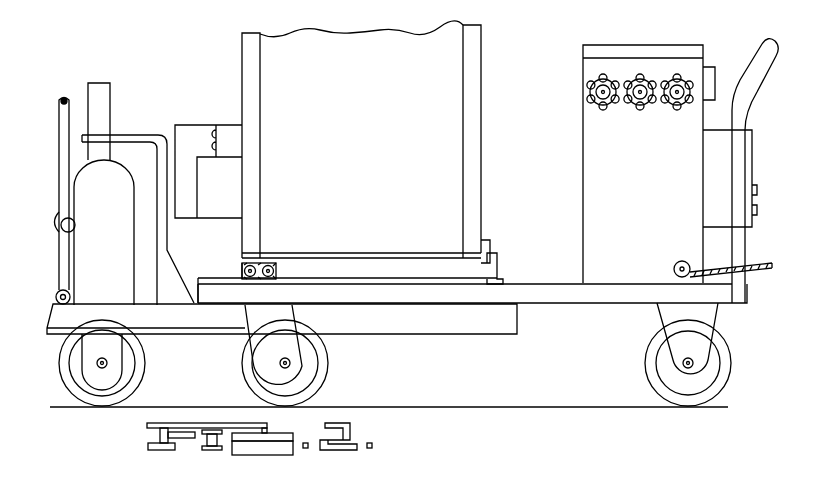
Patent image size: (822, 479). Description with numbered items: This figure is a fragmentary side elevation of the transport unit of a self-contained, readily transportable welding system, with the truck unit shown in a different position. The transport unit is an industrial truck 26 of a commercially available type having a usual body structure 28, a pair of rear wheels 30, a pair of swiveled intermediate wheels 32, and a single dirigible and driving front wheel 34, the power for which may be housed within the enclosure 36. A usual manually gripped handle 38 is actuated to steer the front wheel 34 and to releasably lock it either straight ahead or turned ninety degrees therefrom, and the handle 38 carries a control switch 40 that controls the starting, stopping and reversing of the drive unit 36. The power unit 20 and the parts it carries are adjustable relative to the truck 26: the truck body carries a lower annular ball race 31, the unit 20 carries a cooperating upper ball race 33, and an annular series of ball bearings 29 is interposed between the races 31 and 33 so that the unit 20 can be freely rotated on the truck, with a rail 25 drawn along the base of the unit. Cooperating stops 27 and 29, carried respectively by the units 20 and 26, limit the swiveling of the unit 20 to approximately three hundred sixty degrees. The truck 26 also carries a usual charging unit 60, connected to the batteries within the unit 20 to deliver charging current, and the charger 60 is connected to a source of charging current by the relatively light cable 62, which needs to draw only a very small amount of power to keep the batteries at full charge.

The power unit 20 is at (447, 93).
The rail 25 is at (350, 254).
The industrial truck 26 is at (490, 338).
The stop 27 is at (490, 243).
The body structure 28 is at (230, 318).
The ball bearings 29 is at (258, 263).
The rear wheels 30 is at (710, 392).
The lower annular ball race 31 is at (240, 277).
The swiveled intermediate wheels 32 is at (320, 376).
The upper ball race 33 is at (240, 263).
The front wheel 34 is at (92, 390).
The enclosure 36 is at (113, 173).
The handle 38 is at (62, 167).
The control switch 40 is at (63, 98).
The charging unit 60 is at (595, 160).
The cable 62 is at (767, 270).